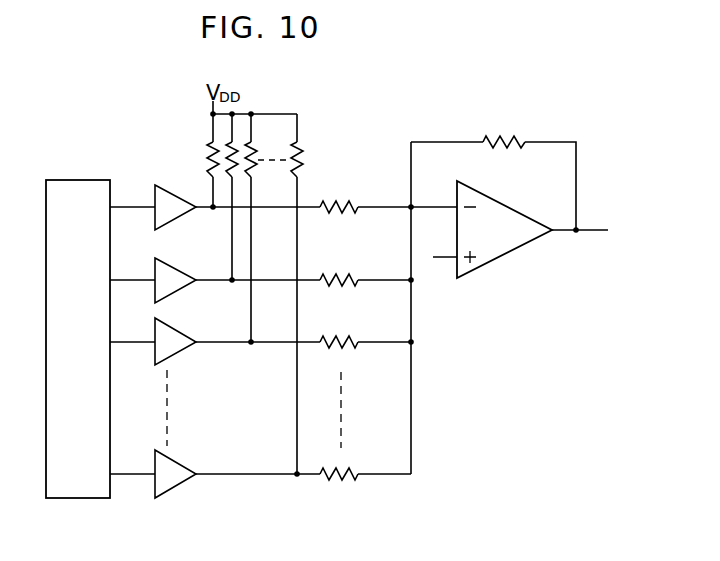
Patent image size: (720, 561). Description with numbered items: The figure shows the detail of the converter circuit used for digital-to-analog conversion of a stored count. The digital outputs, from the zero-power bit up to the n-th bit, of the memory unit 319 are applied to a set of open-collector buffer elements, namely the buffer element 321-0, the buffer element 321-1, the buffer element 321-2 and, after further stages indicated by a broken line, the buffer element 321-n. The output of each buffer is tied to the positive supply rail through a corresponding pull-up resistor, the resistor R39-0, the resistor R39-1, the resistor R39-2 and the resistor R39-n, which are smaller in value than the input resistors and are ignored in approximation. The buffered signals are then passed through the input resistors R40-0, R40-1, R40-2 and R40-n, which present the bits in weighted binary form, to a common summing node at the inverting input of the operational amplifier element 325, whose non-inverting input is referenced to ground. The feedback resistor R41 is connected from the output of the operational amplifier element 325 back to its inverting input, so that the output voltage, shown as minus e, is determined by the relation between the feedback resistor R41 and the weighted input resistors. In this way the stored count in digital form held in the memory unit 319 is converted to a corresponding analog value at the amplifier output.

The memory unit 319 is at (80, 180).
The buffer element 321-0 is at (167, 186).
The buffer element 321-1 is at (182, 265).
The buffer element 321-2 is at (187, 334).
The buffer element 321-n is at (188, 468).
The operational amplifier element 325 is at (492, 262).
The resistor R39-0 is at (211, 142).
The resistor R39-1 is at (233, 142).
The resistor R39-2 is at (253, 142).
The resistor R39-n is at (300, 148).
The input resistor R40-0 is at (350, 193).
The input resistor R40-1 is at (349, 265).
The input resistor R40-2 is at (349, 328).
The input resistor R40-n is at (343, 490).
The feedback resistor R41 is at (493, 166).